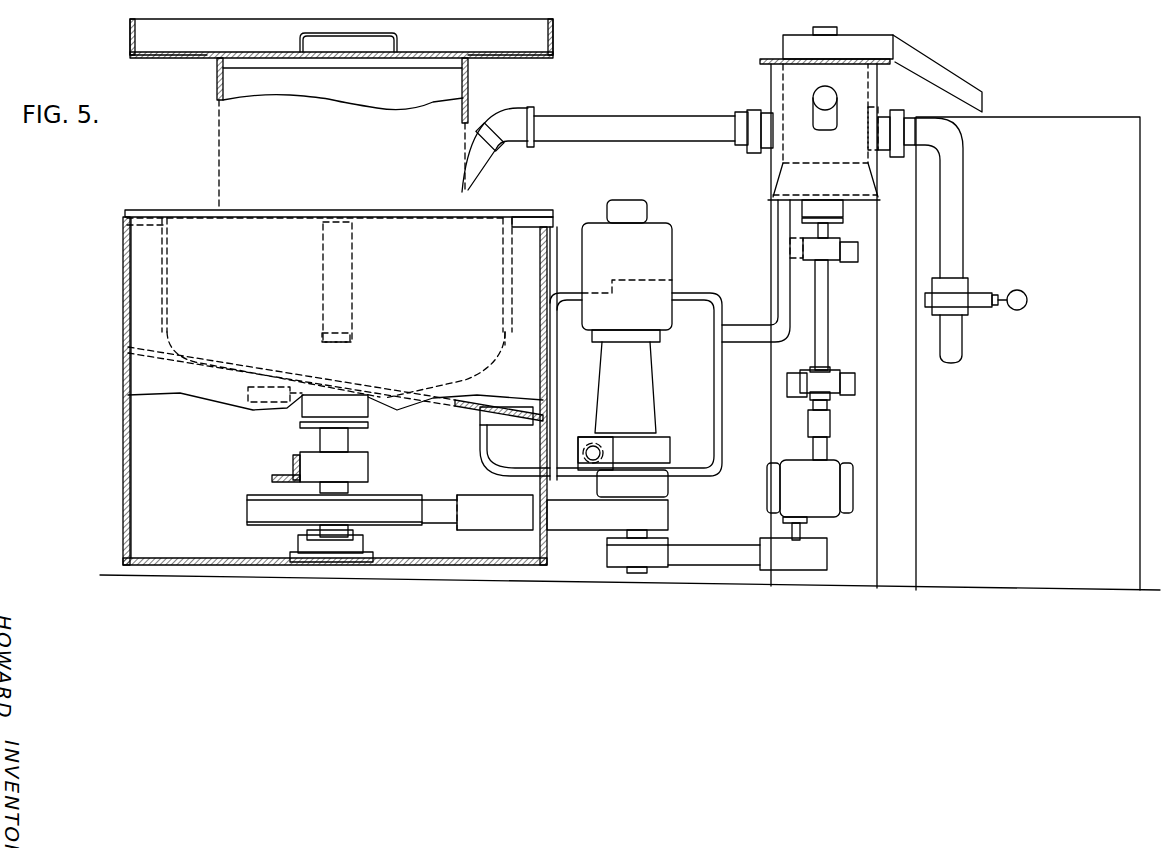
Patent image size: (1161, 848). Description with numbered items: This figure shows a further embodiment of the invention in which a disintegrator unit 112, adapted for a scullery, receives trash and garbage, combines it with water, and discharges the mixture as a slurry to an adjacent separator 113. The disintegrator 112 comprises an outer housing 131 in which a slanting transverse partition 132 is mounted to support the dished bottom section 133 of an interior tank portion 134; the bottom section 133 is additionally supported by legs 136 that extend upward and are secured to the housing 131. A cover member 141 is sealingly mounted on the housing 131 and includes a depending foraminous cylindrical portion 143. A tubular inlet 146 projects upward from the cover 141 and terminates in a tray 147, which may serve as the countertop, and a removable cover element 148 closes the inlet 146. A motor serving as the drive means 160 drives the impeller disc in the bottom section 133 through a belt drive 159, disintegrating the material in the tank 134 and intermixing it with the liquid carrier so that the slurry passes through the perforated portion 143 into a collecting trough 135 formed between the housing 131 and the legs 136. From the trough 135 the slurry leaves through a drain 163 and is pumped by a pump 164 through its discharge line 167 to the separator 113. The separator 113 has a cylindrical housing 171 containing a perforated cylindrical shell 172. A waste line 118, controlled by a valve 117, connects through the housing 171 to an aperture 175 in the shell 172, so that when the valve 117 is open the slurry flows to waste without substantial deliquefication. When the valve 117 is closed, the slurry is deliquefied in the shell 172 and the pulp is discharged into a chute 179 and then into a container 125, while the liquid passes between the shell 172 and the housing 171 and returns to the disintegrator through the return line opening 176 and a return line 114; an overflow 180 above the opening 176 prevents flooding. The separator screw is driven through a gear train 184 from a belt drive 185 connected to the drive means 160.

The disintegrator unit 112 is at (155, 206).
The separator 113 is at (765, 196).
The return line 114 is at (630, 122).
The valve 117 is at (972, 292).
The waste line 118 is at (960, 218).
The container 125 is at (1100, 117).
The outer housing 131 is at (127, 264).
The slanting transverse partition 132 is at (453, 407).
The dished bottom section 133 is at (466, 373).
The interior tank portion 134 is at (215, 374).
The collecting trough 135 is at (124, 311).
The legs 136 is at (162, 296).
The cover member 141 is at (510, 213).
The depending cylindrical portion 143 is at (513, 316).
The tubular inlet 146 is at (462, 103).
The tray 147 is at (555, 53).
The removable cover element 148 is at (453, 47).
The belt drive 159 is at (436, 512).
The drive means 160 is at (697, 307).
The drain 163 is at (495, 447).
The pump 164 is at (640, 425).
The discharge line 167 is at (743, 327).
The cylindrical housing 171 is at (771, 83).
The perforated cylindrical shell 172 is at (777, 77).
The aperture 175 is at (879, 110).
The return line opening 176 is at (766, 143).
The chute 179 is at (948, 82).
The overflow 180 is at (838, 102).
The gear train 184 is at (825, 500).
The belt drive 185 is at (712, 548).